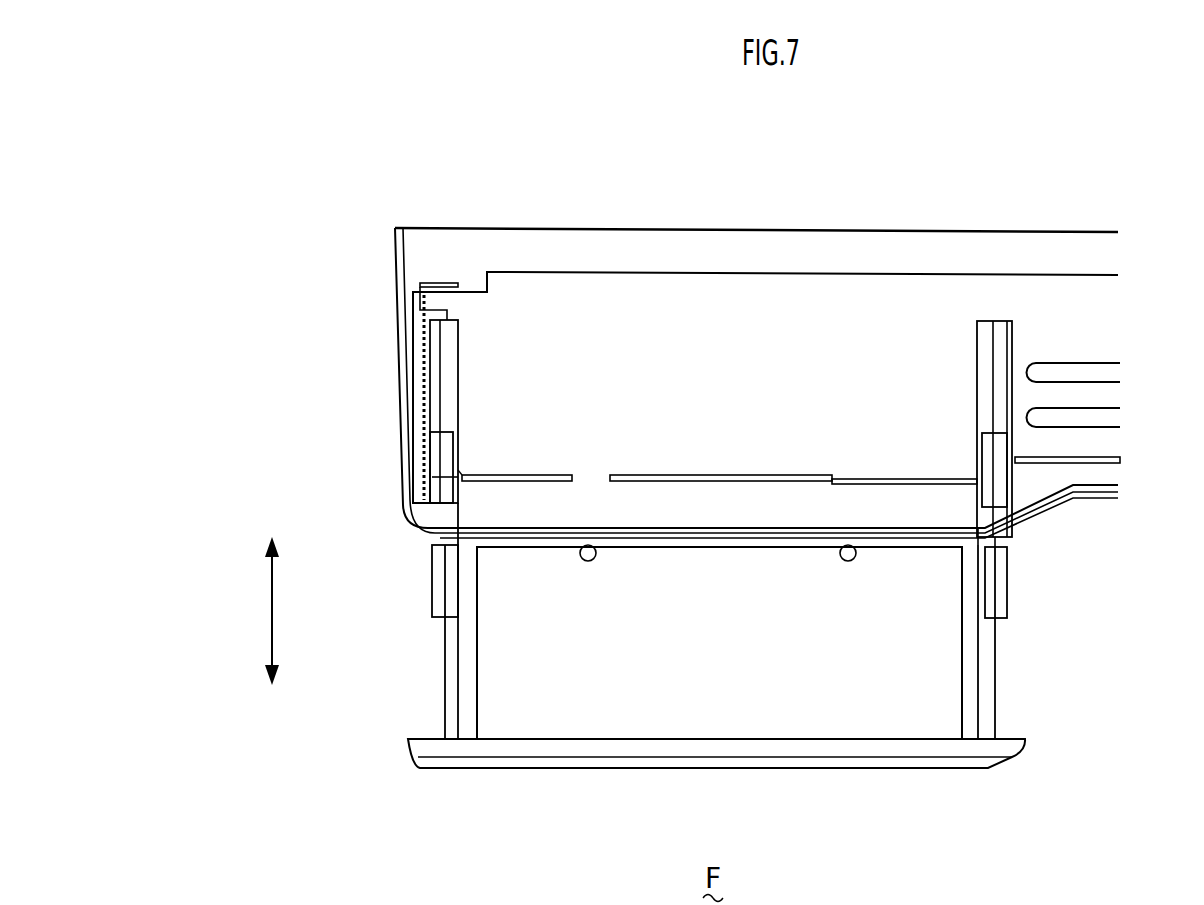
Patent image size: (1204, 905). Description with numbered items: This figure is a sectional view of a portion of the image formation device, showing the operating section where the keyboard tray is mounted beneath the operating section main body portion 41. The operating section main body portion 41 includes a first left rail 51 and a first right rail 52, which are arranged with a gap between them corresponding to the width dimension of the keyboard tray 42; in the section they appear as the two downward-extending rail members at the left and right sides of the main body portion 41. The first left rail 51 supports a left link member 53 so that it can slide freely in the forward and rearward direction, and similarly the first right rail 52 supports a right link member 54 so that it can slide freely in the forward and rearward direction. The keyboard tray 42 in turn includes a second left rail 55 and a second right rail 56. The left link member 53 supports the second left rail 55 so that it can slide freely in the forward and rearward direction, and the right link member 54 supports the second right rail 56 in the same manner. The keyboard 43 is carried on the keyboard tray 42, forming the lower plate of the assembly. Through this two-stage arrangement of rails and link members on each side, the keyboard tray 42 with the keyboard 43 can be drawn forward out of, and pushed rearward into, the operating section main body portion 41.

The operating section main body portion 41 is at (577, 298).
The keyboard tray 42 is at (970, 680).
The keyboard 43 is at (935, 713).
The first left rail 51 is at (432, 353).
The first right rail 52 is at (1000, 347).
The left link member 53 is at (442, 515).
The right link member 54 is at (998, 543).
The second left rail 55 is at (452, 688).
The second right rail 56 is at (988, 645).